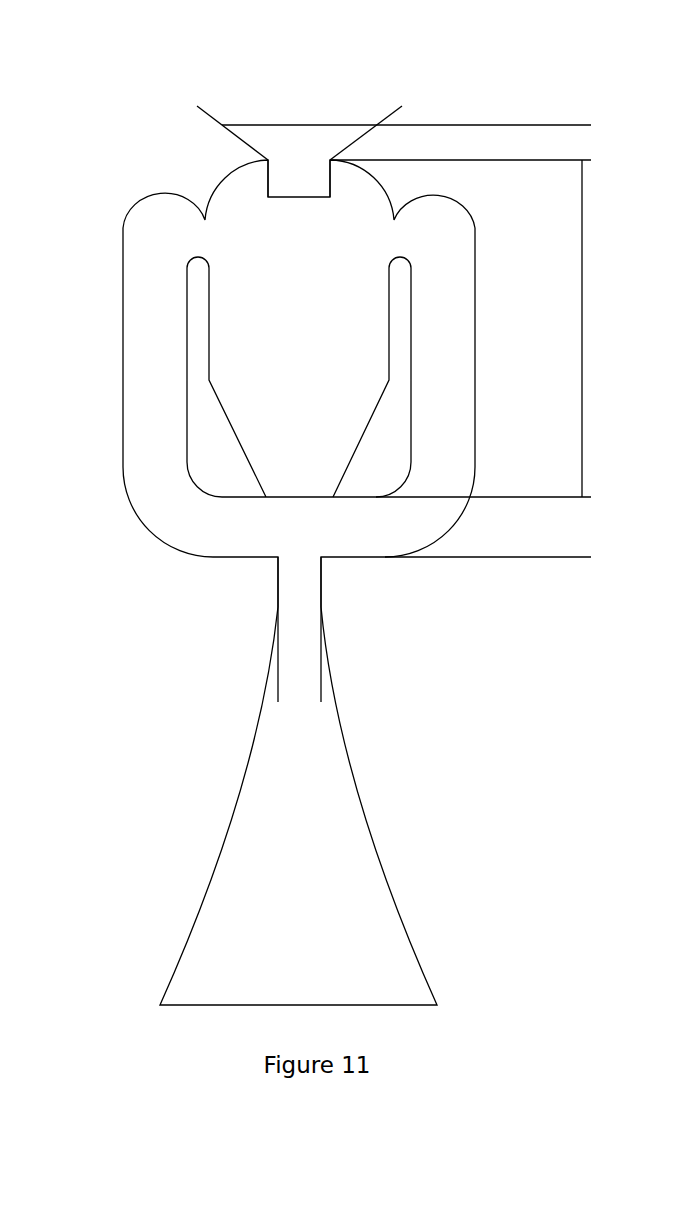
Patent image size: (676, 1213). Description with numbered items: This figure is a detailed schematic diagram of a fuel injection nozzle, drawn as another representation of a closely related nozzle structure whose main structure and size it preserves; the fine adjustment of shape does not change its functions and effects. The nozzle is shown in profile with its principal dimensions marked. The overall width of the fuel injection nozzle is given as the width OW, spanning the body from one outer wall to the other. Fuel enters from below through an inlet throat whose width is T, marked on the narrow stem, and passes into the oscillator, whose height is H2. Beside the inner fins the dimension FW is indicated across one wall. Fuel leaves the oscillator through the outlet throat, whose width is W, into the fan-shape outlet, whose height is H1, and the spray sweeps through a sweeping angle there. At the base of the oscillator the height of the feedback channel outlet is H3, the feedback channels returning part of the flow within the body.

The width of the fuel injection nozzle OW is at (475, 413).
The wall thickness / fin width FW is at (187, 345).
The width of the outlet throat W is at (268, 188).
The height of the fan-shape outlet H1 is at (582, 160).
The height of the oscillator H2 is at (564, 328).
The height of the feedback channel outlet H3 is at (582, 497).
The width of the inlet throat T is at (235, 697).